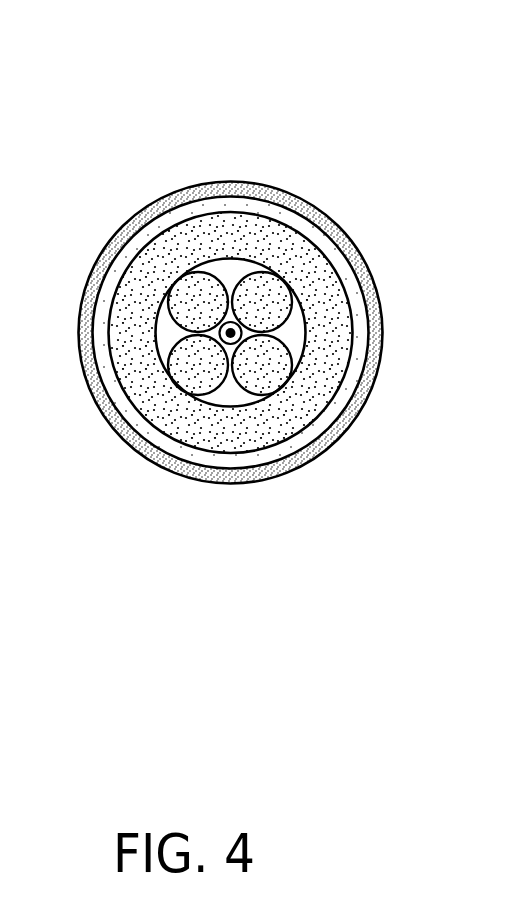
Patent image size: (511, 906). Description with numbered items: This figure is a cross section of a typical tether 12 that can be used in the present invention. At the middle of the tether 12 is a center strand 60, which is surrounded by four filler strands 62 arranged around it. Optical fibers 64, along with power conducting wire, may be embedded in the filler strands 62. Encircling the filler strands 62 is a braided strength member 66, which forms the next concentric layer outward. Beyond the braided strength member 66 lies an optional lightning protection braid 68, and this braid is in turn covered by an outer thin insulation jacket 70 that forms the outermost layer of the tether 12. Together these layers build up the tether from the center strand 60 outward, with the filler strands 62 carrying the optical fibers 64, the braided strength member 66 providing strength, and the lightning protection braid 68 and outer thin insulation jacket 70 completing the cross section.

The tether 12 is at (256, 300).
The center strand 60 is at (222, 342).
The filler strands 62 is at (287, 282).
The optical fibers 64 is at (197, 298).
The braided strength member 66 is at (333, 328).
The lightning protection braid 68 is at (355, 385).
The outer thin insulation jacket 70 is at (308, 462).